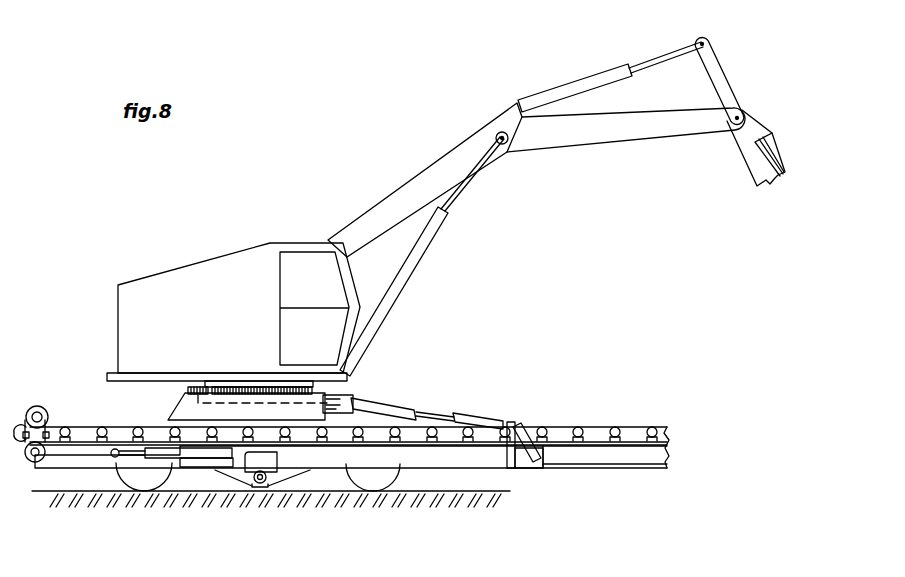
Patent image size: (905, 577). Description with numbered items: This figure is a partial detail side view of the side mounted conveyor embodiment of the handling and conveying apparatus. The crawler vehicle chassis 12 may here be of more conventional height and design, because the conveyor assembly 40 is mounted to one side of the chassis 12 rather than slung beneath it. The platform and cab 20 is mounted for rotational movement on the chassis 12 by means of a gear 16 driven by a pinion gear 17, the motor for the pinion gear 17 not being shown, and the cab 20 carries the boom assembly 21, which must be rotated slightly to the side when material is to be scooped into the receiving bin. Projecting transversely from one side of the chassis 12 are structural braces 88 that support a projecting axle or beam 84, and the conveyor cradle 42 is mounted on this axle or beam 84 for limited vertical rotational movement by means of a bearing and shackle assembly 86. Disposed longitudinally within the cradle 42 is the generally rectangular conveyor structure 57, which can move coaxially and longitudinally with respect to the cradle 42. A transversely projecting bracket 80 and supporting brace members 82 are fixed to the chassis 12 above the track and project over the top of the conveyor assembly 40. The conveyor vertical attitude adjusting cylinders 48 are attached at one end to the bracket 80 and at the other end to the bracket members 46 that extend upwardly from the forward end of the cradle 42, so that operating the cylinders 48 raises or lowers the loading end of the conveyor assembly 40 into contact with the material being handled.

The chassis 12 is at (183, 410).
The gear 16 is at (252, 386).
The pinion gear 17 is at (197, 386).
The platform and cab 20 is at (127, 338).
The boom assembly 21 is at (410, 178).
The conveyor assembly 40 is at (576, 424).
The conveyor cradle 42 is at (472, 471).
The bracket member 46 is at (512, 422).
The conveyor tilting hydraulic cylinder 48 is at (417, 408).
The conveyor structure 57 is at (610, 471).
The transversely projecting bracket 80 is at (380, 403).
The supporting brace member 82 is at (348, 397).
The axle or beam 84 is at (262, 484).
The bearing and shackle assembly 86 is at (282, 458).
The structural brace 88 is at (238, 478).